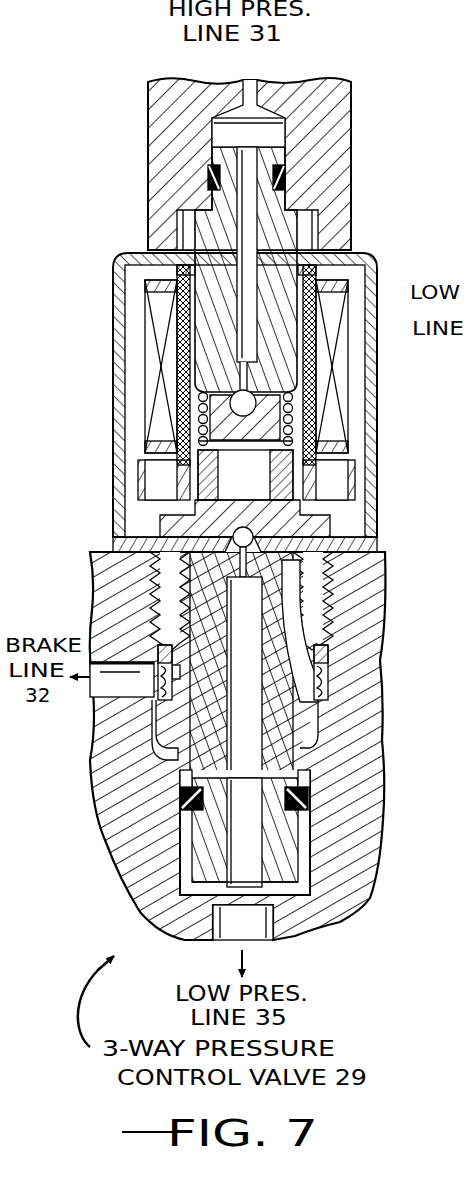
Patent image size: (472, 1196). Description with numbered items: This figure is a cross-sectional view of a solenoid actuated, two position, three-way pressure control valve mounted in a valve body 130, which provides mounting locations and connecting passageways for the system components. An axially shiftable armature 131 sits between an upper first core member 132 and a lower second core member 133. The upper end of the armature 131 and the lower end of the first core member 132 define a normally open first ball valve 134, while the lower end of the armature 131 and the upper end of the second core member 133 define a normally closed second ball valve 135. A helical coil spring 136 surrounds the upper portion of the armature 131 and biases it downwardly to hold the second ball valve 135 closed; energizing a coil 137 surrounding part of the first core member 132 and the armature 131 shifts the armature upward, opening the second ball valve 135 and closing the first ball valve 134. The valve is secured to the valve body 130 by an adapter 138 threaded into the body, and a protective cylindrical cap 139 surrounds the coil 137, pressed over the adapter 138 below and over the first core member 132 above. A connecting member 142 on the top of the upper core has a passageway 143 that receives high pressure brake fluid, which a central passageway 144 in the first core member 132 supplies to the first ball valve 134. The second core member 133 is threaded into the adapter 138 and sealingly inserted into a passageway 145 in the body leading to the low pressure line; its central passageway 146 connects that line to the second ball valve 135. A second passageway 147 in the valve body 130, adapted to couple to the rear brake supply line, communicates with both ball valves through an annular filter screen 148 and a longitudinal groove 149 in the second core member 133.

The valve body 130 is at (360, 631).
The armature 131 is at (292, 483).
The first core member 132 is at (290, 245).
The second core member 133 is at (300, 715).
The first ball valve 134 is at (268, 386).
The second ball valve 135 is at (258, 530).
The helical coil spring 136 is at (292, 418).
The coil 137 is at (115, 365).
The adapter 138 is at (113, 530).
The protective cylindrical cap 139 is at (115, 443).
The connecting member 142 is at (162, 165).
The passageway 143 is at (285, 137).
The central passageway 144 is at (250, 213).
The passageway 145 is at (305, 855).
The central passageway 146 is at (258, 764).
The second passageway 147 is at (125, 690).
The annular filter screen 148 is at (329, 672).
The longitudinal groove 149 is at (290, 578).